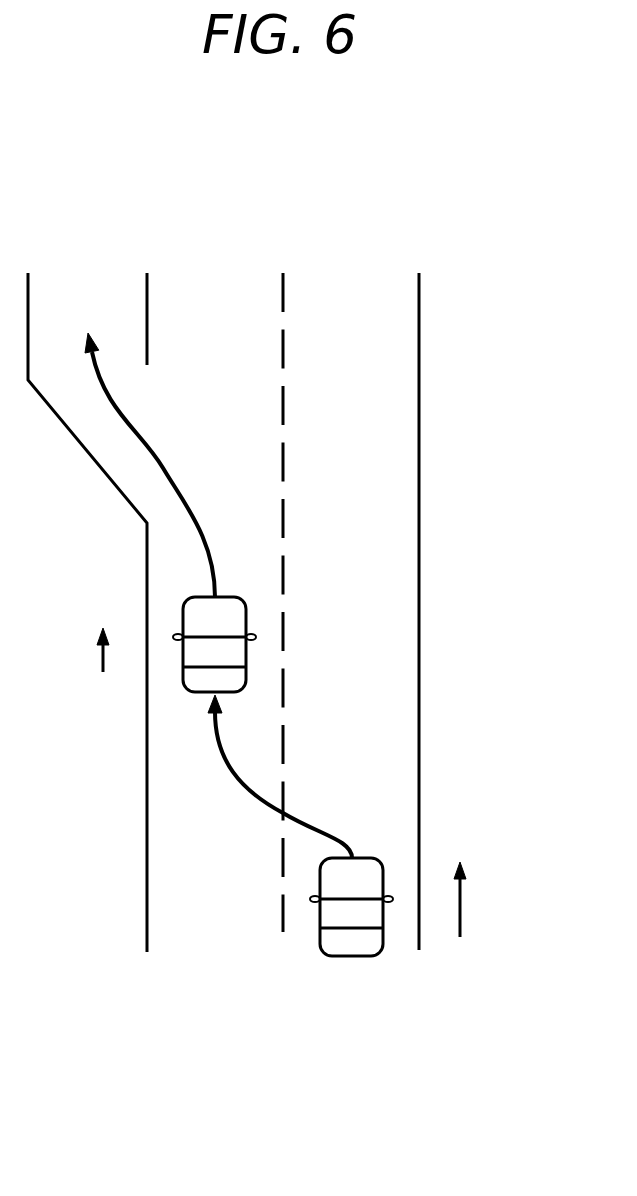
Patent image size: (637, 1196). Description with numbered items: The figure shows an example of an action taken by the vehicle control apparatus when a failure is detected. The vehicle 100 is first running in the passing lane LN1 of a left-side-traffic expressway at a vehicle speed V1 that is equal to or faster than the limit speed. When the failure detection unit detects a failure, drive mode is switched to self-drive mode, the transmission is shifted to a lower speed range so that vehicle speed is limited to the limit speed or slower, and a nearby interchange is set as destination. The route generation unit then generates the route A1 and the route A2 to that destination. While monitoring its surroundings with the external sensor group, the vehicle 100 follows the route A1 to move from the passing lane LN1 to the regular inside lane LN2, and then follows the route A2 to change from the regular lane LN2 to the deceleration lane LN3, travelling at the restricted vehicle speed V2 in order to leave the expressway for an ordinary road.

The vehicle 100 is at (351, 957).
The passing lane LN1 is at (365, 302).
The regular lane LN2 is at (222, 302).
The deceleration lane LN3 is at (88, 302).
The route A1 is at (280, 776).
The route A2 is at (150, 465).
The vehicle speed V1 is at (484, 899).
The vehicle speed V2 is at (79, 650).